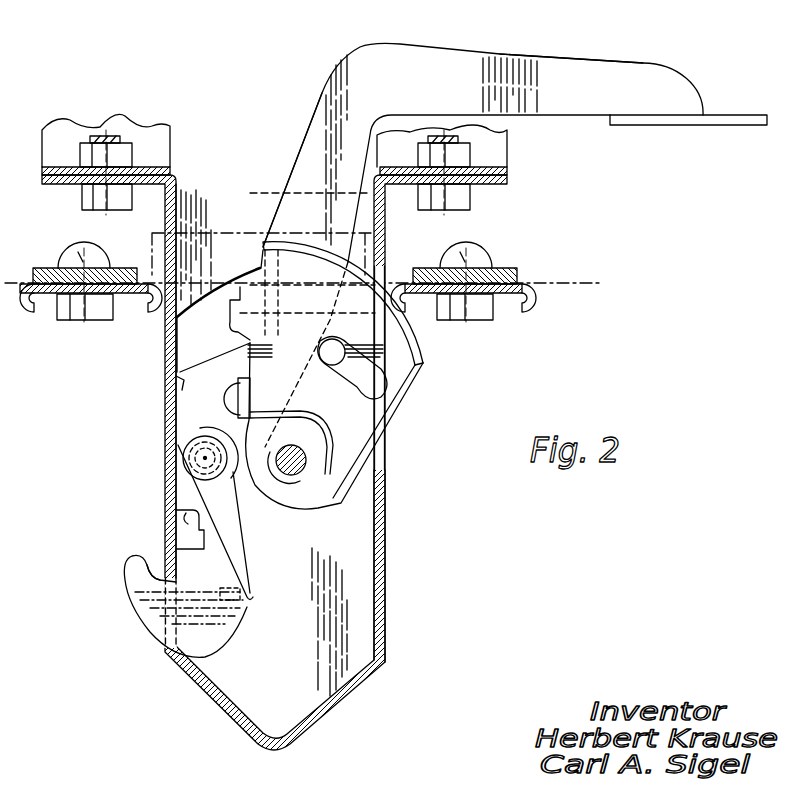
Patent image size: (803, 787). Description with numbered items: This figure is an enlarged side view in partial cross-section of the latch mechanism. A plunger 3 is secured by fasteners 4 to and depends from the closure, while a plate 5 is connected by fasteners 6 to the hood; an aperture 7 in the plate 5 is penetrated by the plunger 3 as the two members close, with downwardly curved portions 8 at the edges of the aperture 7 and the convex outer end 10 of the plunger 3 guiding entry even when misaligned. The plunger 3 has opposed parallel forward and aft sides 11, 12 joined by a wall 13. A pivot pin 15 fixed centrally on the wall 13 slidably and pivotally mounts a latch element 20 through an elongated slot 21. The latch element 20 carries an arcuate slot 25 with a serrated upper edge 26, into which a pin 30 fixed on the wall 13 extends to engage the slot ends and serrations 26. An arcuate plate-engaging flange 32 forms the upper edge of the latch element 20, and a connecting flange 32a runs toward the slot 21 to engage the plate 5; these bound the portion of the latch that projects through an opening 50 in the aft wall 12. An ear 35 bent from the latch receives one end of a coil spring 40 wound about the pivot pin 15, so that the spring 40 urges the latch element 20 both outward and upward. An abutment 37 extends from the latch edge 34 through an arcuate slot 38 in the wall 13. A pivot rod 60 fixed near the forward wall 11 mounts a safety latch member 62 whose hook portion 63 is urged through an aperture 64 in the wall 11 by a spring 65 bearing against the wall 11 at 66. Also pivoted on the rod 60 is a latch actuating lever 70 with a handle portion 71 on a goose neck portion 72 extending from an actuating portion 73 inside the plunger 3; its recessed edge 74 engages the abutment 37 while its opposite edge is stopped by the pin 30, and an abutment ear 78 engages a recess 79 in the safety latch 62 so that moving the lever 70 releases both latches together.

The plunger 3 is at (593, 292).
The fasteners 4 is at (88, 200).
The plate 5 is at (520, 280).
The fasteners 6 is at (78, 310).
The aperture 7 is at (166, 312).
The downwardly curved portions 8 is at (143, 303).
The outer end 10 is at (297, 745).
The forward side 11 is at (168, 428).
The aft side 12 is at (386, 572).
The wall 13 is at (200, 203).
The pivot pin 15 is at (310, 490).
The latch element 20 is at (404, 410).
The slot 21 is at (290, 482).
The arcuate slot 25 is at (418, 386).
The serrated edge 26 is at (340, 347).
The pin 30 is at (325, 345).
The flange 32 is at (343, 303).
The flange 32a is at (392, 420).
The edge 34 is at (232, 340).
The ear 35 is at (251, 394).
The abutment 37 is at (232, 336).
The arcuate slot 38 is at (231, 316).
The latch actuating coil spring 40 is at (300, 410).
The opening 50 is at (386, 460).
The pivot rod 60 is at (198, 460).
The safety latch member 62 is at (234, 618).
The hook portion 63 is at (128, 583).
The aperture 64 is at (156, 565).
The spring 65 is at (245, 560).
The spring engagement point 66 is at (178, 381).
The latch actuating lever 70 is at (350, 56).
The handle portion 71 is at (730, 118).
The goose neck portion 72 is at (548, 62).
The actuating portion 73 is at (302, 155).
The recessed edge 74 is at (262, 275).
The abutment ear 78 is at (185, 535).
The recess 79 is at (185, 513).